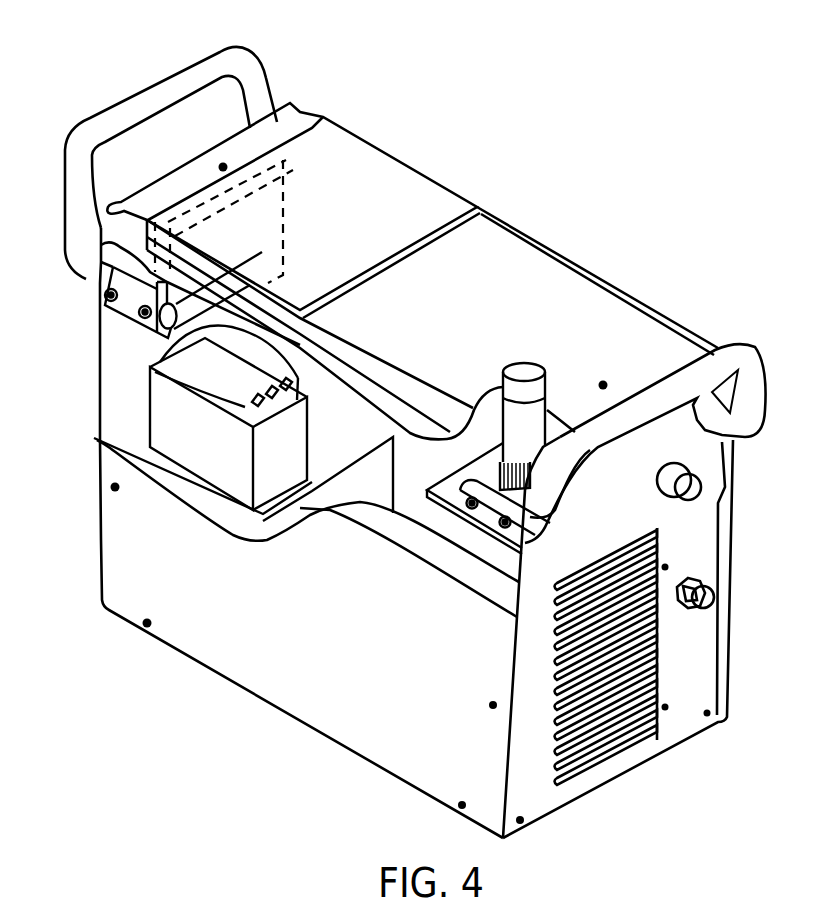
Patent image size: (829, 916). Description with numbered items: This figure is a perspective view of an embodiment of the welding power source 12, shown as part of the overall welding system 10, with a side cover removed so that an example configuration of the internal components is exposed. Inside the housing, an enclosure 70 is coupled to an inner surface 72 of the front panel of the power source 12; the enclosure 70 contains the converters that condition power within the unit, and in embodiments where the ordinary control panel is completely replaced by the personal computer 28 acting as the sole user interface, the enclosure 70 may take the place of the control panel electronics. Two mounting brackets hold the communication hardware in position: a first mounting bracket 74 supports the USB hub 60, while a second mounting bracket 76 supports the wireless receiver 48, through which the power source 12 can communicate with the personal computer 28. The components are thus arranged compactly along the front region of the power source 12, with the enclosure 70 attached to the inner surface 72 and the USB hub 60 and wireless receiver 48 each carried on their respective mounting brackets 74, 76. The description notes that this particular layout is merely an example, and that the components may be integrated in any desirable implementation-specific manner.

The welding system 10 is at (150, 44).
The welding power source 12 is at (648, 292).
The personal computer 28 is at (410, 145).
The wireless receiver 48 is at (518, 362).
The USB hub 60 is at (180, 383).
The enclosure 70 is at (294, 142).
The inner surface 72 is at (103, 326).
The first mounting bracket 74 is at (165, 407).
The second mounting bracket 76 is at (447, 480).